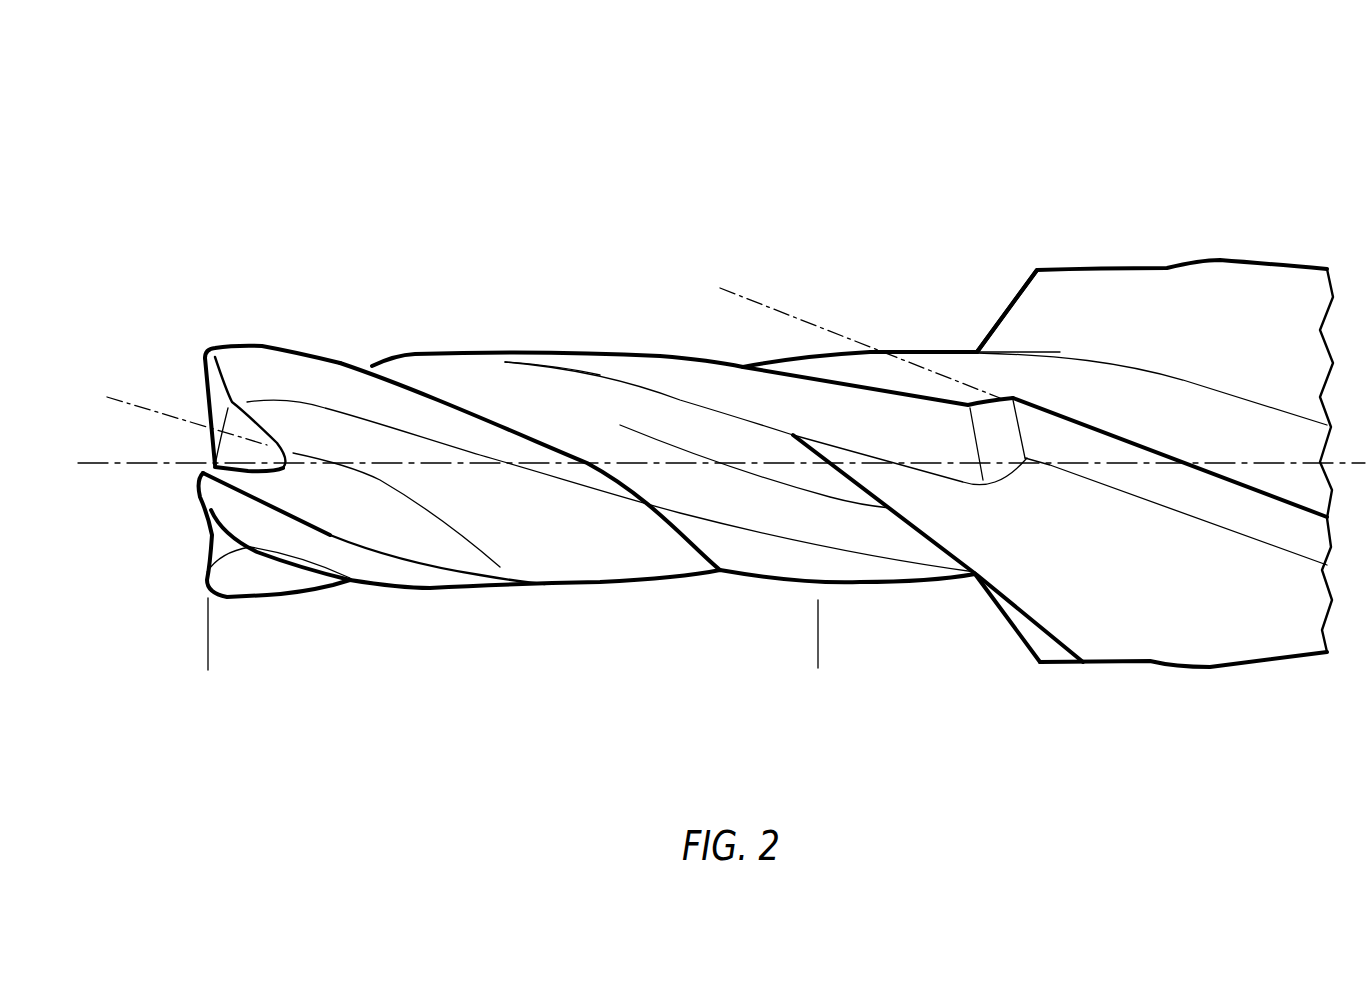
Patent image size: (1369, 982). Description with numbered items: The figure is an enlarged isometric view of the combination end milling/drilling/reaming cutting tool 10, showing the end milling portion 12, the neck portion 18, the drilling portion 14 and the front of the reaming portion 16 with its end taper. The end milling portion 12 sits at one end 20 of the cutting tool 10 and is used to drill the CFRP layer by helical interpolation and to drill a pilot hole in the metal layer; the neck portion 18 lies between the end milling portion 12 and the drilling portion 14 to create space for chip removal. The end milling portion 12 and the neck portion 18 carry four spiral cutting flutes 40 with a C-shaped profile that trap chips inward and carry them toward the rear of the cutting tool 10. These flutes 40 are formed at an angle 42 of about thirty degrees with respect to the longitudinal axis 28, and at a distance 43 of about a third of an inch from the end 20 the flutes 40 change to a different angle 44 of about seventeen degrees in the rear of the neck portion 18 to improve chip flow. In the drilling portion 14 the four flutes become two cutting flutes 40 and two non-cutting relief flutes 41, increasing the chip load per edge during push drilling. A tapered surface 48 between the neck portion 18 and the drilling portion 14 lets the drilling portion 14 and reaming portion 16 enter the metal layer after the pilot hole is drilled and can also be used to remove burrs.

The combination end milling/drilling/reaming cutting tool 10 is at (337, 139).
The end milling portion 12 is at (238, 327).
The drilling portion 14 is at (1120, 253).
The reaming portion 16 is at (1288, 243).
The neck portion 18 is at (605, 327).
The end 20 is at (198, 545).
The longitudinal axis 28 is at (105, 464).
The spiral cutting flutes 40 is at (510, 387).
The non-cutting relief flutes 41 is at (1067, 350).
The angle 42 is at (143, 409).
The distance 43 is at (818, 655).
The angle 44 is at (776, 311).
The tapered surface 48 is at (1010, 305).